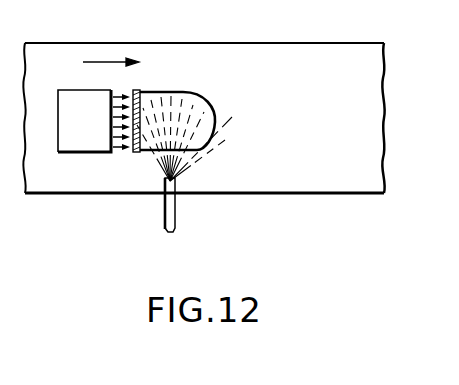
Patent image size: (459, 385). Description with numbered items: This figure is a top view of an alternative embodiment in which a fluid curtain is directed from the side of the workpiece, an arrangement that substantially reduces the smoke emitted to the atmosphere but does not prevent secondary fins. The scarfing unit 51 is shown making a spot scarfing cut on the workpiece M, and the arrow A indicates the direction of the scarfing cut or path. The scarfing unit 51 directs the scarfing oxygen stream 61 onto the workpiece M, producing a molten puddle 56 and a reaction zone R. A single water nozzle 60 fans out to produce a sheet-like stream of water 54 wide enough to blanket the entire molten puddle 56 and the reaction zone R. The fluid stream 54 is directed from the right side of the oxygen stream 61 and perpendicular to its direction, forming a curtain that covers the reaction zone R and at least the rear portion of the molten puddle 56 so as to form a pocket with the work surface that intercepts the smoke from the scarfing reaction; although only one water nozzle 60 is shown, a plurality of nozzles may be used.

The scarfing unit 51 is at (72, 100).
The arrow A is at (105, 62).
The workpiece M is at (250, 51).
The molten puddle 56 is at (189, 105).
The sheet-like stream of water 54 is at (220, 138).
The scarfing oxygen stream 61 is at (114, 152).
The reaction zone R is at (132, 152).
The water nozzle 60 is at (177, 218).